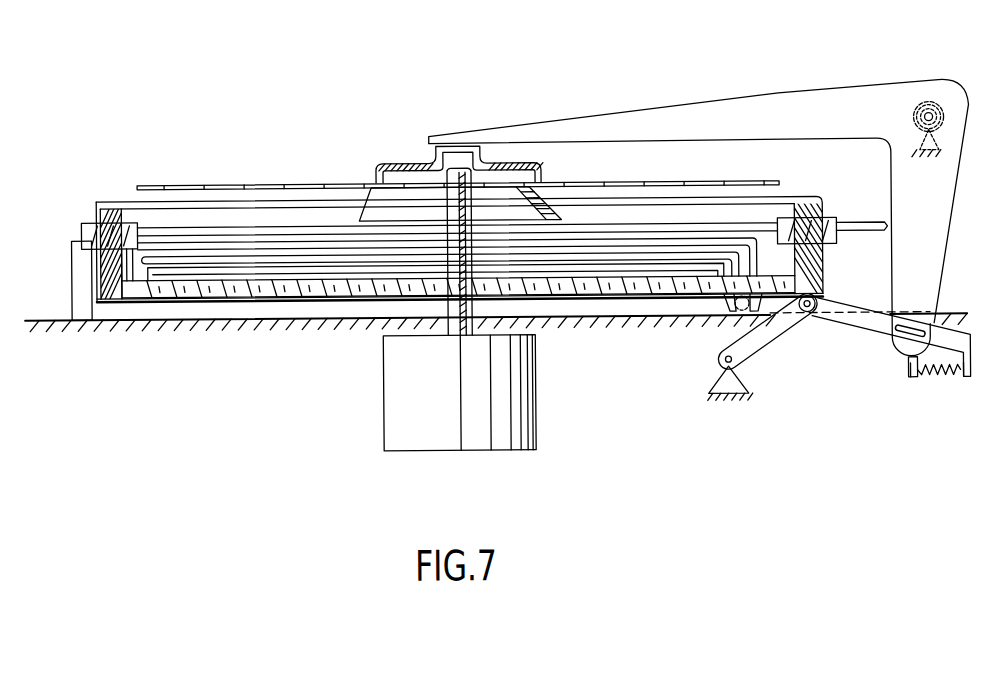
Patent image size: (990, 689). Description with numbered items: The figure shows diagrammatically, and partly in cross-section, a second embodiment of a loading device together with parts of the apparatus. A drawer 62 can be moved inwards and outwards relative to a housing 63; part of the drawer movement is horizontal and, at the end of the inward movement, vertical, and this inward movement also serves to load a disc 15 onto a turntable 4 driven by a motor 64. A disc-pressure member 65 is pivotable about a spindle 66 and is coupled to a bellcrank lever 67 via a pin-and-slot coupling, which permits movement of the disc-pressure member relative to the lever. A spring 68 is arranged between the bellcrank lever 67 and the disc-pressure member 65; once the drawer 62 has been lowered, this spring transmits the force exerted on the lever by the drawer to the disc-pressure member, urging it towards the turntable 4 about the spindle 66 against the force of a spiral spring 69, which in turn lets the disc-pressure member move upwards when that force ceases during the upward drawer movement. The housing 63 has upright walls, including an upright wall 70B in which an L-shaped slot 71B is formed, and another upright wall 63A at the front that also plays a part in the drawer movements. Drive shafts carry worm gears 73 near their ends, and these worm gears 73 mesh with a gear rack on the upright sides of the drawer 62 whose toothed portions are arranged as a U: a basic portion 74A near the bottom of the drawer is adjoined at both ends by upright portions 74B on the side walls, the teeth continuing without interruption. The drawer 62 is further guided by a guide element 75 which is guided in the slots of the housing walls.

The turntable 4 is at (402, 194).
The disc 15 is at (175, 183).
The drawer 62 is at (228, 201).
The housing 63 is at (155, 322).
The upright wall 63A is at (82, 307).
The motor 64 is at (515, 370).
The disc-pressure member 65 is at (748, 117).
The spindle 66 is at (930, 116).
The bellcrank lever 67 is at (863, 326).
The spring 68 is at (938, 381).
The spiral spring 69 is at (918, 108).
The upright wall 70B is at (620, 308).
The L-shaped slot 71B is at (310, 254).
The worm gear 73 is at (830, 253).
The basic portion 74A is at (247, 288).
The upright portion 74B is at (808, 212).
The guide element 75 is at (770, 315).